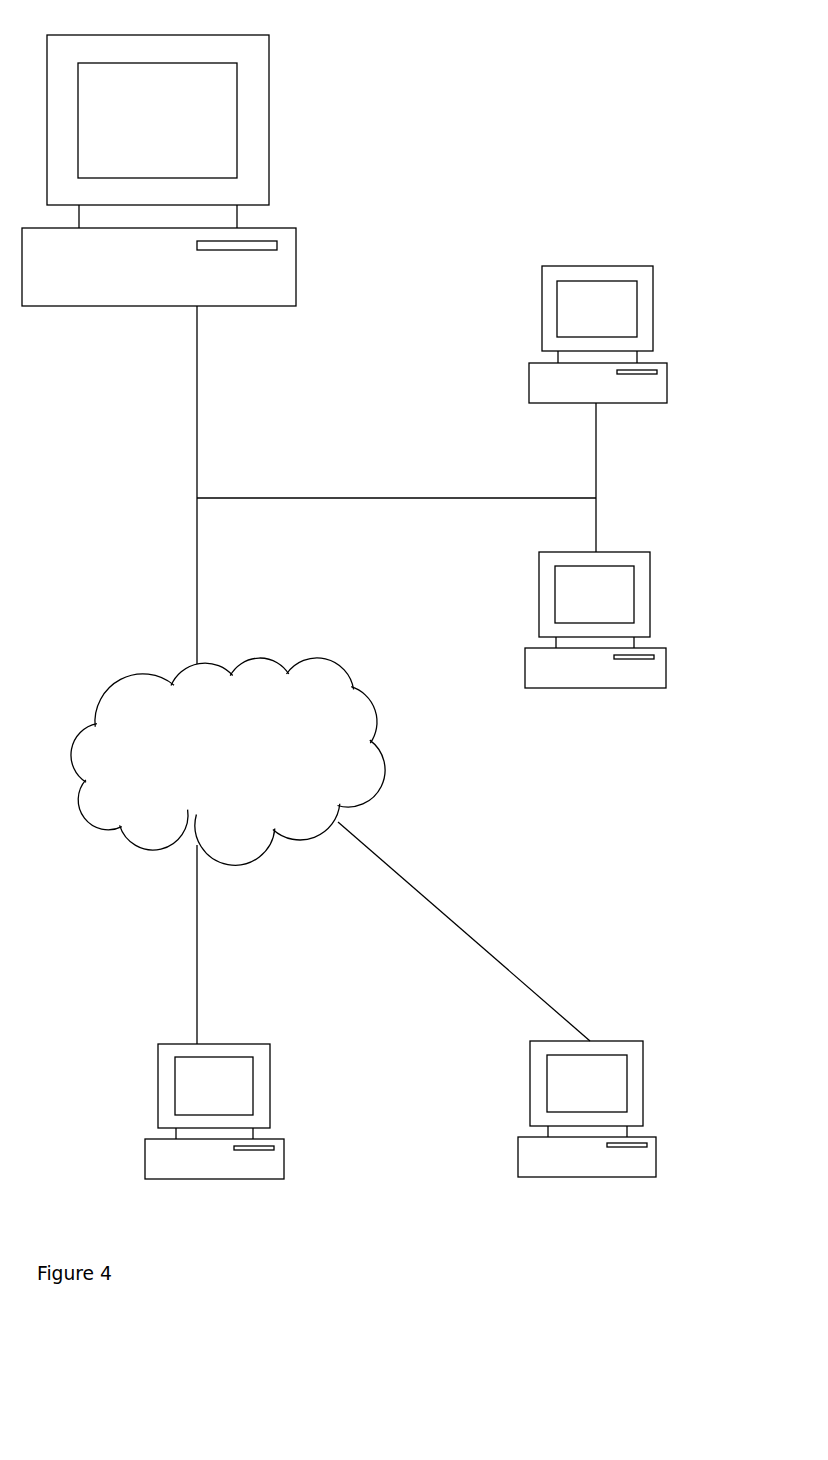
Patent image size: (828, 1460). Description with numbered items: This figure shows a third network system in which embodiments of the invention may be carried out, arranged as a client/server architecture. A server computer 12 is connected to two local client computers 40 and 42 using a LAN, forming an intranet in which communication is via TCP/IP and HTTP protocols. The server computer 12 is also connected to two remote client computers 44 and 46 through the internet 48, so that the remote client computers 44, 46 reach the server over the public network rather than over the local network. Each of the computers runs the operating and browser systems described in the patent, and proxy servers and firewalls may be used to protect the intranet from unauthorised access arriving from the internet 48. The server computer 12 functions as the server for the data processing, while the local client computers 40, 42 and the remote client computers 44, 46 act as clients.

The server computer 12 is at (281, 148).
The local client computer 40 is at (667, 296).
The local client computer 42 is at (665, 601).
The remote client computer 44 is at (145, 1118).
The remote client computer 46 is at (660, 1109).
The internet 48 is at (228, 761).